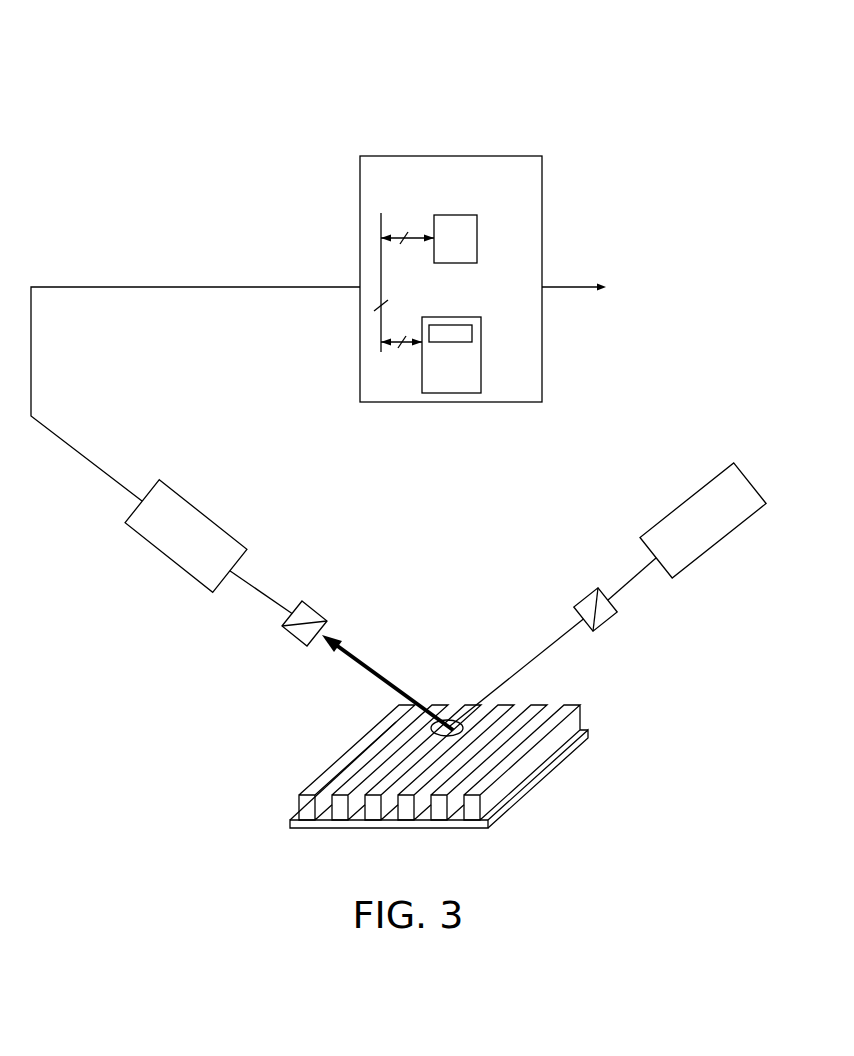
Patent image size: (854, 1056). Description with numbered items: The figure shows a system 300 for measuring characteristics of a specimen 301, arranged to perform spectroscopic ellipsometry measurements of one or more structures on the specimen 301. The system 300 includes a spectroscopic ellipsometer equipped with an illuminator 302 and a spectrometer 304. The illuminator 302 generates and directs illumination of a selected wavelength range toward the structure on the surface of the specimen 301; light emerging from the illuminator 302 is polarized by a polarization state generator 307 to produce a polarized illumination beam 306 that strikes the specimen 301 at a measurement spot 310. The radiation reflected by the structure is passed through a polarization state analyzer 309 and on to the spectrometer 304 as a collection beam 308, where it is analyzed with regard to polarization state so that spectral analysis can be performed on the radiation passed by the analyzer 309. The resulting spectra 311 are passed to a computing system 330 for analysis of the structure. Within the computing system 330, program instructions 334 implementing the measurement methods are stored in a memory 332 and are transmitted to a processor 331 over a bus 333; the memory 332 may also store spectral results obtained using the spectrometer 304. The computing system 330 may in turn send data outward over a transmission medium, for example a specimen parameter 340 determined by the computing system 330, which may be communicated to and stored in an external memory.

The system 300 is at (40, 96).
The specimen 301 is at (583, 717).
The illuminator 302 is at (715, 529).
The spectrometer 304 is at (197, 538).
The polarized illumination beam 306 is at (566, 637).
The polarization state generator 307 is at (610, 618).
The collection beam 308 is at (348, 663).
The polarization state analyzer 309 is at (290, 636).
The measurement spot 310 is at (433, 729).
The spectra 311 is at (288, 301).
The computing system 330 is at (465, 178).
The processor 331 is at (477, 239).
The memory 332 is at (422, 388).
The bus 333 is at (381, 275).
The program instructions 334 is at (472, 333).
The specimen parameter 340 is at (579, 290).